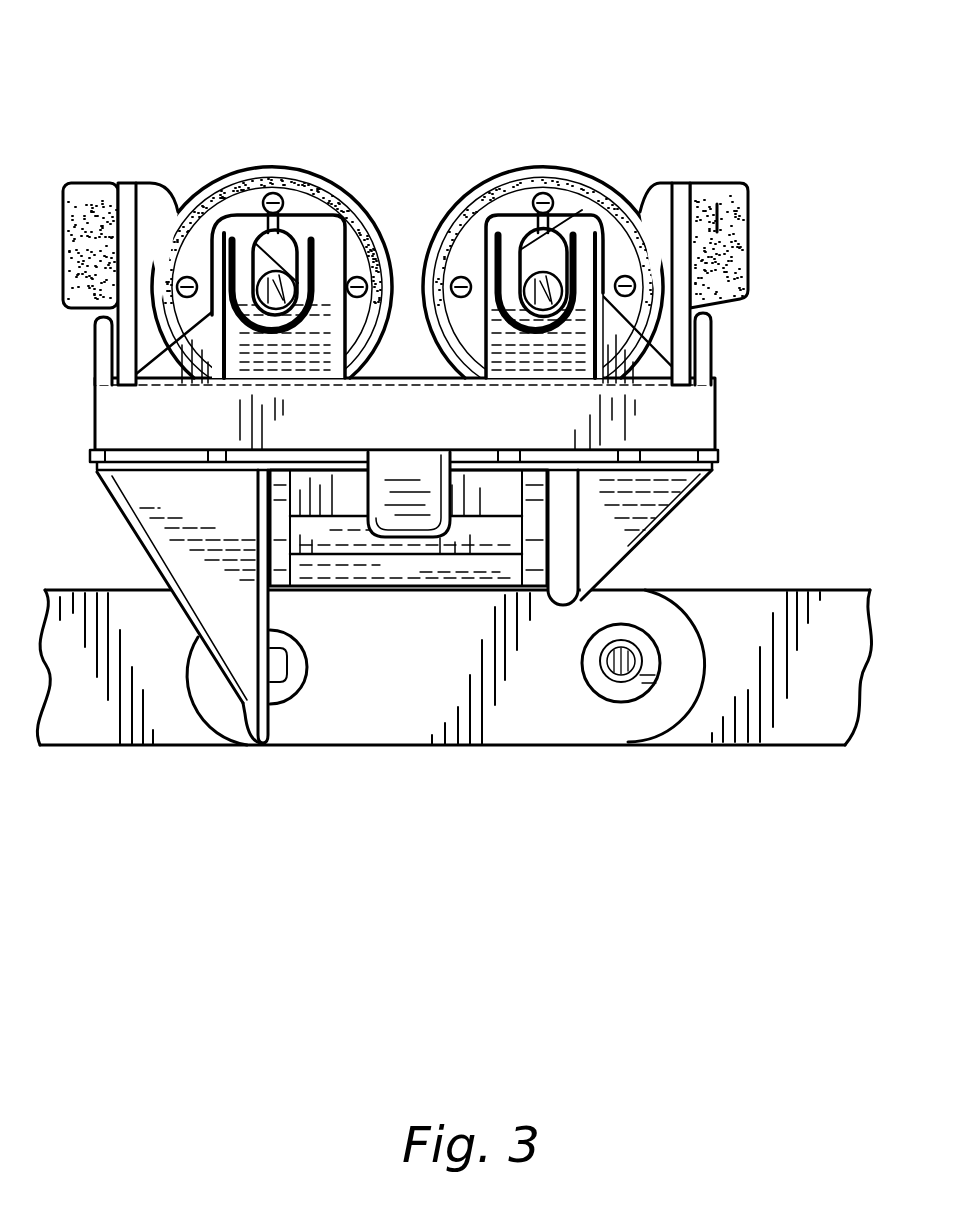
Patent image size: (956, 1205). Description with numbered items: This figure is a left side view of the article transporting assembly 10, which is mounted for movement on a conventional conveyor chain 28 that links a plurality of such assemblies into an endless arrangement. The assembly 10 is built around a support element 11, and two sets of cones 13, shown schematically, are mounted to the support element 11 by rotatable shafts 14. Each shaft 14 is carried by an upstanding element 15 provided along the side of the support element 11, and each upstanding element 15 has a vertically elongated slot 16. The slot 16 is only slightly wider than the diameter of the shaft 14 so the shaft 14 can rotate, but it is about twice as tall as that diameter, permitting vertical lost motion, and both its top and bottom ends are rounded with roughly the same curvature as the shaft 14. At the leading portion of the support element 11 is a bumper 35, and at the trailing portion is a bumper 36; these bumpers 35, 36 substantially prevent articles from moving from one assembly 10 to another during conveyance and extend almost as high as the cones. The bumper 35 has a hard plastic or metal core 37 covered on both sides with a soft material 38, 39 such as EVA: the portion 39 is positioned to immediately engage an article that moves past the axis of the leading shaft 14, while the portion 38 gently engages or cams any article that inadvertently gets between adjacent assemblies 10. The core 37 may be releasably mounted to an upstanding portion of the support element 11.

The article transporting assembly 10 is at (459, 371).
The support element 11 is at (693, 418).
The set of cones 13 is at (273, 125).
The rotatable shaft 14 is at (291, 287).
The upstanding element 15 is at (196, 216).
The vertically elongated slot 16 is at (299, 200).
The conveyor chain 28 is at (752, 606).
The bumper 35 is at (733, 209).
The bumper 36 is at (118, 170).
The core 37 is at (690, 185).
The soft material 38 is at (720, 214).
The soft material 39 is at (657, 198).